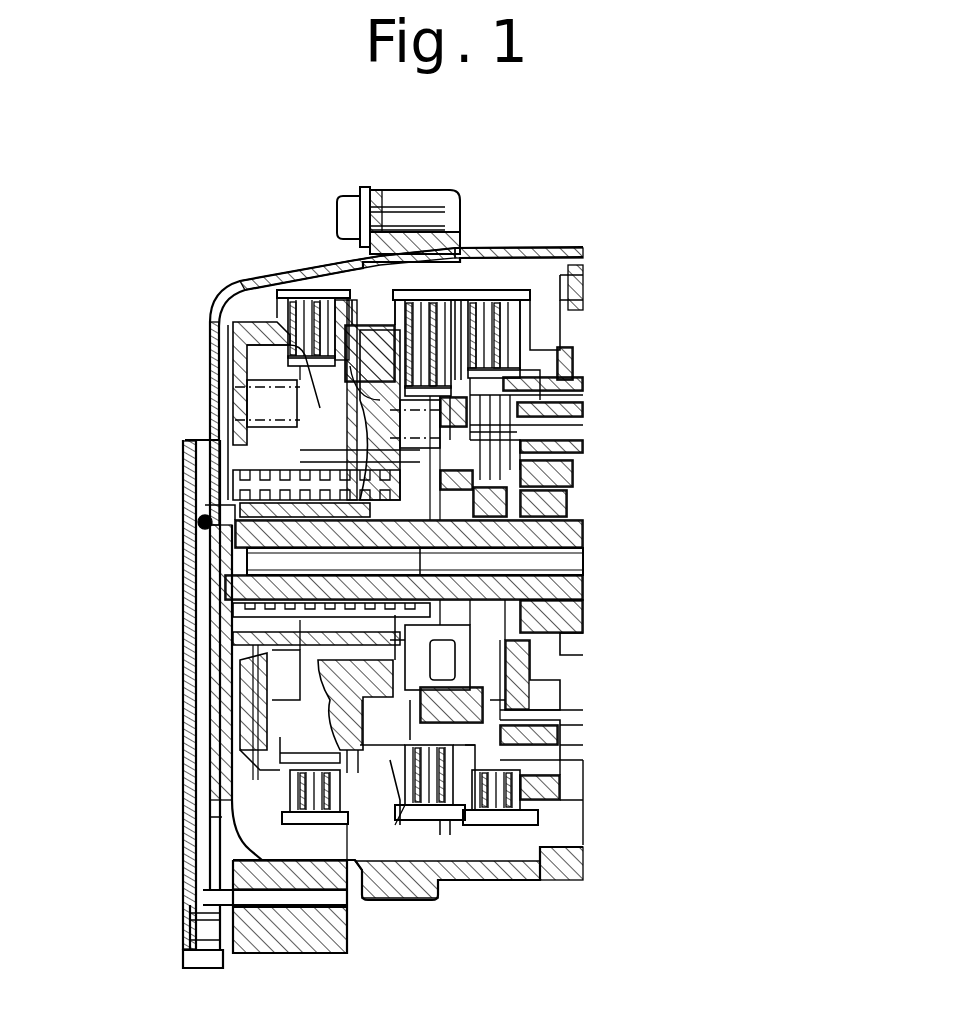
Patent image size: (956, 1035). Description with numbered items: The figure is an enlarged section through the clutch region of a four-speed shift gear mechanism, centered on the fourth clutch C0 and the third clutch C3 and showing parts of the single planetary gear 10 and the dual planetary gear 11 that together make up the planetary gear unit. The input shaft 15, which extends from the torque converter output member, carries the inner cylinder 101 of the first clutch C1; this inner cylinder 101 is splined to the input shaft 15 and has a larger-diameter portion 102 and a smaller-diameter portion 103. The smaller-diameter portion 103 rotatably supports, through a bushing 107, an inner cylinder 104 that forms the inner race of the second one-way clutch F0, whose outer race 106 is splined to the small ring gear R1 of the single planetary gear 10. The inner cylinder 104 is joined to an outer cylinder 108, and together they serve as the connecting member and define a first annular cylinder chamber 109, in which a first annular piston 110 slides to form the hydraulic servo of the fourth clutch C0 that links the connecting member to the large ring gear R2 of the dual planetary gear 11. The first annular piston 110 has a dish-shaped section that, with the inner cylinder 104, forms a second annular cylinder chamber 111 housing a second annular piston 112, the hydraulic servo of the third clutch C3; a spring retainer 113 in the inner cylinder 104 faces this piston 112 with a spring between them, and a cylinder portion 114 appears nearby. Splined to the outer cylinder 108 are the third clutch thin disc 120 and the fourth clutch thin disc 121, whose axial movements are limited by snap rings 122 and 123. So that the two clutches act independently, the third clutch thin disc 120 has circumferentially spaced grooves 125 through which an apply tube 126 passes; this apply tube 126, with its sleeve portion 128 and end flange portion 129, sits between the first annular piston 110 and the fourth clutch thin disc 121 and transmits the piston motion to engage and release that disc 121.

The single planetary gear 10 is at (573, 370).
The dual planetary gear 11 is at (585, 395).
The input shaft 15 is at (548, 540).
The inner cylinder of the first clutch 101 is at (415, 561).
The larger-diameter portion 102 is at (280, 455).
The smaller-diameter portion 103 is at (448, 561).
The inner cylinder 104 is at (548, 483).
The outer race 106 is at (545, 432).
The bushing 107 is at (500, 643).
The outer cylinder 108 is at (466, 298).
The first annular cylinder chamber 109 is at (292, 712).
The first annular piston 110 is at (340, 700).
The second annular cylinder chamber 111 is at (330, 718).
The second annular piston 112 is at (310, 606).
The spring retainer 113 is at (390, 440).
The cylinder 114 is at (295, 428).
The third clutch thin disc 120 is at (375, 300).
The fourth clutch thin disc 121 is at (512, 300).
The snap ring 122 is at (458, 812).
The snap ring 123 is at (520, 815).
The grooves 125 is at (420, 805).
The apply tube 126 is at (445, 805).
The sleeve portion 128 is at (400, 805).
The flange portion 129 is at (478, 810).
The fourth clutch C0 is at (500, 287).
The first clutch C1 is at (293, 288).
The third clutch C3 is at (430, 286).
The second one-way clutch F0 is at (555, 447).
The small ring gear R1 is at (535, 736).
The large ring gear R2 is at (563, 792).